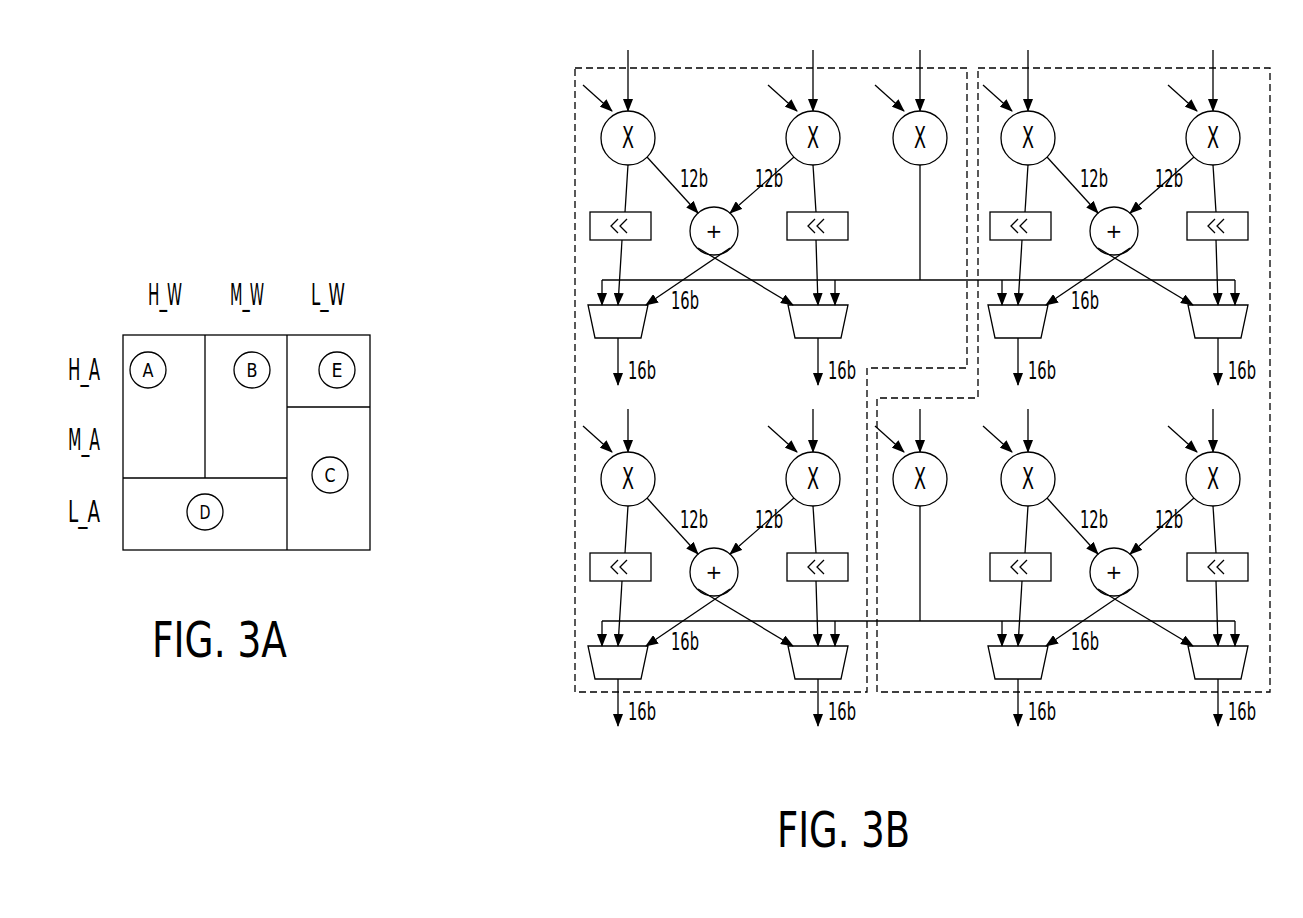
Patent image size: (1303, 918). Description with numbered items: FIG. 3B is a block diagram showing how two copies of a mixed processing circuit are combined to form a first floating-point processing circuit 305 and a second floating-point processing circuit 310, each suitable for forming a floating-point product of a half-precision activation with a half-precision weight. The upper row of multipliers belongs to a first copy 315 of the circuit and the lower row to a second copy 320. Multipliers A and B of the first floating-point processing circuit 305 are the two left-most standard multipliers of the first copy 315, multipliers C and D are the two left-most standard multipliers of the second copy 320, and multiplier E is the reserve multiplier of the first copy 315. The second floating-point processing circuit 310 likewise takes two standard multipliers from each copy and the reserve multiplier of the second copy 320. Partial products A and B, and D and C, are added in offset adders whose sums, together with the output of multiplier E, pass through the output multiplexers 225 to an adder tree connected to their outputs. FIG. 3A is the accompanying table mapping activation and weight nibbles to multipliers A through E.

The output multiplexer 225 is at (648, 318).
The first floating-point processing circuit 305 is at (713, 693).
The second floating-point processing circuit 310 is at (950, 693).
The first copy of the circuit 315 is at (555, 82).
The second copy of the circuit 320 is at (555, 425).